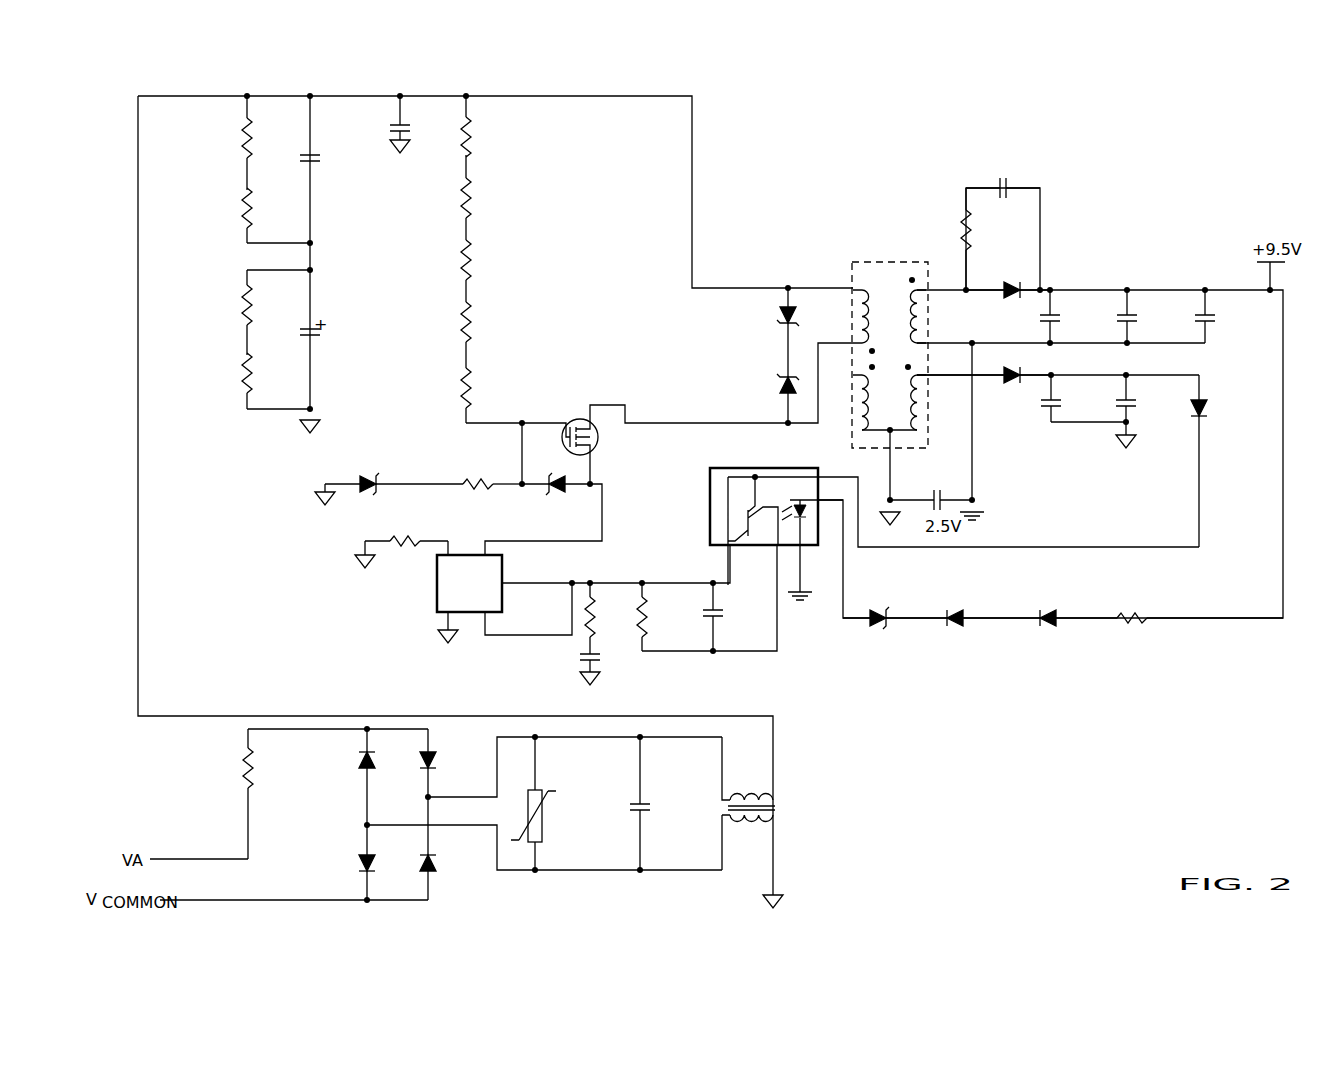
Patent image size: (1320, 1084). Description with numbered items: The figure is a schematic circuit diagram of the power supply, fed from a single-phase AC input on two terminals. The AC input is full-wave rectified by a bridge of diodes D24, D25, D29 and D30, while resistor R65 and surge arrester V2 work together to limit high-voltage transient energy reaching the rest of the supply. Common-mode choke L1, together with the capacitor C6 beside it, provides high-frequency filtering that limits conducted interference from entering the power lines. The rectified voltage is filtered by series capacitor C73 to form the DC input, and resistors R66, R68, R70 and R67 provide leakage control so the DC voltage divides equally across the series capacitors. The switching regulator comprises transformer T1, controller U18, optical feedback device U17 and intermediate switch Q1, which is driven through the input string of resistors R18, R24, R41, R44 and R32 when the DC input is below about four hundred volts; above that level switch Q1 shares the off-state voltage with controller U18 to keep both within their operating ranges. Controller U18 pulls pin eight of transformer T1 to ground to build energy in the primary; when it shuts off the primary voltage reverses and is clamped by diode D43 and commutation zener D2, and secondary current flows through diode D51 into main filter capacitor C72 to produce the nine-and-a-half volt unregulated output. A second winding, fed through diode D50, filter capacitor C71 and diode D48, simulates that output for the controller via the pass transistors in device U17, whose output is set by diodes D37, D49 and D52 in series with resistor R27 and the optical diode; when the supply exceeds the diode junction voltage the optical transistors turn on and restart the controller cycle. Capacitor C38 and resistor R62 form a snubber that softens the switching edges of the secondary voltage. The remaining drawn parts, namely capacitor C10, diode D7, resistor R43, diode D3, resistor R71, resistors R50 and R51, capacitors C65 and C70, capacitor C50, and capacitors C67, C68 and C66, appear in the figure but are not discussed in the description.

The resistor R66 is at (221, 143).
The resistor R68 is at (221, 214).
The series capacitor C73 is at (296, 170).
The capacitor 0.01uF 1.6KV C10 is at (375, 128).
The resistor R70 is at (221, 312).
The resistor R67 is at (221, 379).
The input resistor R18 is at (506, 137).
The input resistor R24 is at (506, 208).
The input resistor R41 is at (506, 271).
The input resistor R44 is at (506, 334).
The input resistor R32 is at (506, 395).
The intermediate switch Q1 is at (675, 404).
The transient suppressor diode P4KE400 D7 is at (389, 463).
The resistor 22 R43 is at (492, 463).
The zener diode 1N52438 D3 is at (565, 505).
The resistor 4.7K R71 is at (406, 538).
The controller U18 is at (508, 586).
The resistor 6.8 R50 is at (608, 618).
The capacitor 220uF 10V C65 is at (618, 674).
The resistor 100K R51 is at (665, 617).
The capacitor 100pF C70 is at (738, 617).
The commutation zener D2 is at (748, 332).
The diode D43 is at (753, 395).
The optical feedback device U17 is at (776, 509).
The transformer T1 is at (888, 360).
The capacitor 470pF C50 is at (931, 479).
The snubber capacitor C38 is at (1004, 155).
The snubber resistor R62 is at (986, 239).
The secondary diode D51 is at (1008, 290).
The capacitor 0.01uF C67 is at (1076, 316).
The main filter capacitor C72 is at (1161, 316).
The capacitor 0.1uF C68 is at (1232, 318).
The secondary diode D50 is at (984, 378).
The capacitor 0.01uF C66 is at (1079, 398).
The filter capacitor C71 is at (1152, 409).
The diode D48 is at (1231, 461).
The diode D37 is at (895, 611).
The diode D49 is at (987, 593).
The diode D52 is at (1072, 593).
The resistor 549 1% R27 is at (1200, 628).
The resistor R65 is at (214, 794).
The diode D24 is at (336, 777).
The diode D25 is at (336, 862).
The diode D29 is at (458, 792).
The diode D30 is at (461, 877).
The surge arrester V2 is at (569, 803).
The capacitor 0.1uF 1.5KV C6 is at (666, 803).
The common-mode choke L1 is at (749, 803).